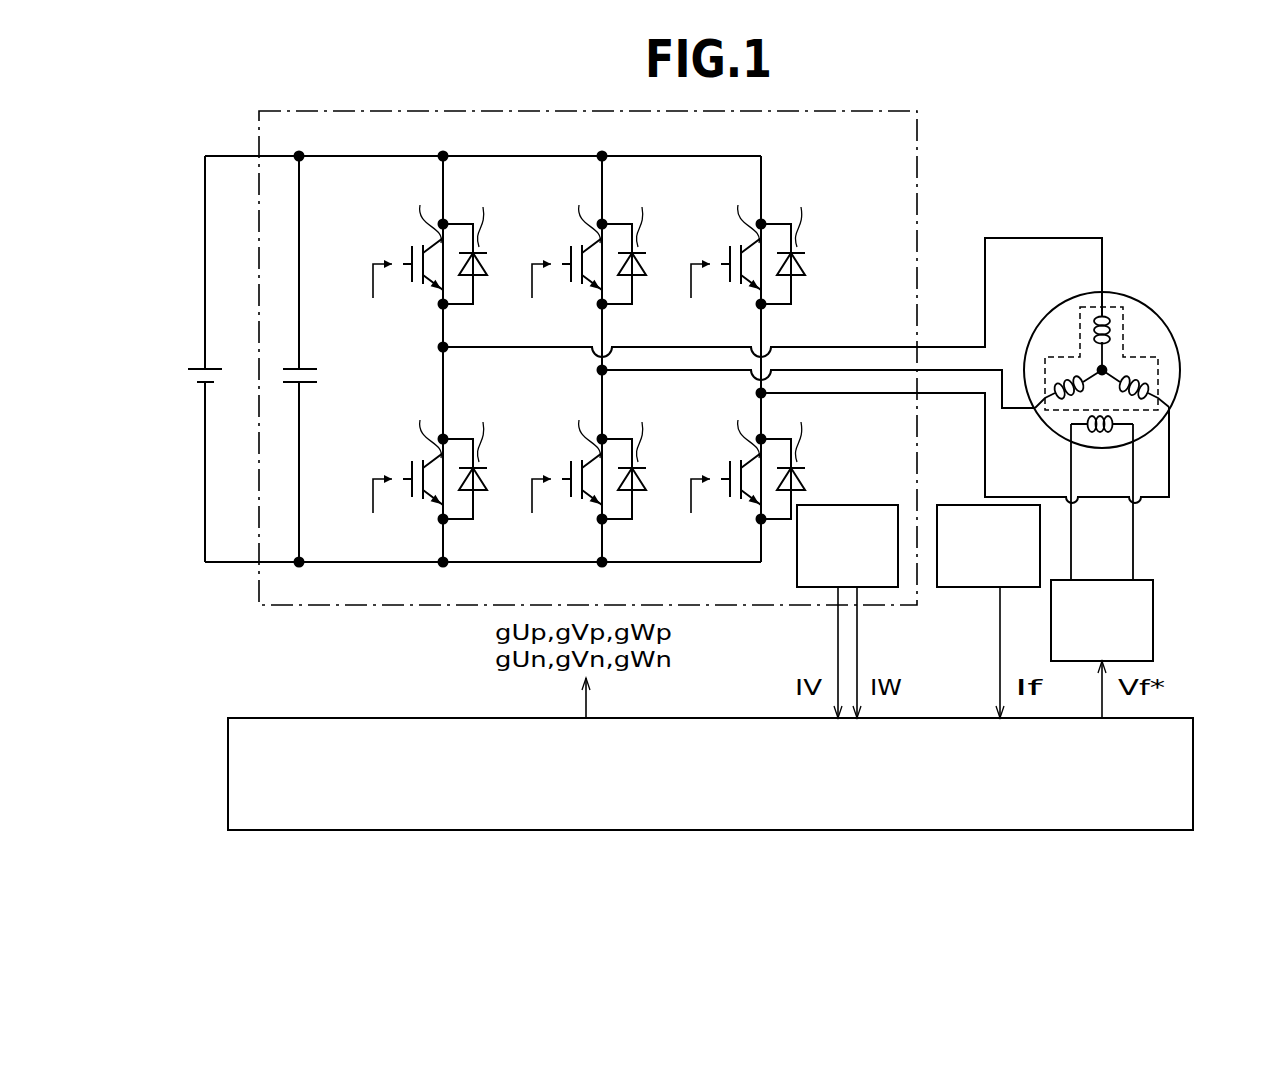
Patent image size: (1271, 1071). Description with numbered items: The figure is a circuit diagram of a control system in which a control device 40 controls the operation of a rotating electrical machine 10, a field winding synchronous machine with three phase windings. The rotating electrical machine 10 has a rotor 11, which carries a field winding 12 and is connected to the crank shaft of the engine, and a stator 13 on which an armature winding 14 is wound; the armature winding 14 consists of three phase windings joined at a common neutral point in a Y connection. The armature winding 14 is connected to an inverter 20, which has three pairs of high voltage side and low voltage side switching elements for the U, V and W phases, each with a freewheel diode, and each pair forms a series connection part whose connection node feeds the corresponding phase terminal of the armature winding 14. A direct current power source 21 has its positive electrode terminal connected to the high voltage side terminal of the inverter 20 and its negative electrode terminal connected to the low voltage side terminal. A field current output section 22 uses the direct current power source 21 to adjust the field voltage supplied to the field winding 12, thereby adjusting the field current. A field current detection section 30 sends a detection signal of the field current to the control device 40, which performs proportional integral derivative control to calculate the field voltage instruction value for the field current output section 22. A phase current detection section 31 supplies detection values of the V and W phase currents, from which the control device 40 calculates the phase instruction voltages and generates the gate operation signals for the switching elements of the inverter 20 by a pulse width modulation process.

The rotating electrical machine 10 is at (1136, 398).
The rotor 11 is at (1177, 320).
The field winding 12 is at (1107, 433).
The stator 13 is at (1127, 305).
The armature winding 14 is at (1098, 306).
The inverter 20 is at (917, 185).
The direct current power source 21 is at (217, 368).
The field current output section 22 is at (1153, 632).
The field current detection section 30 is at (955, 587).
The phase current detection section 31 is at (877, 505).
The control device 40 is at (1193, 790).